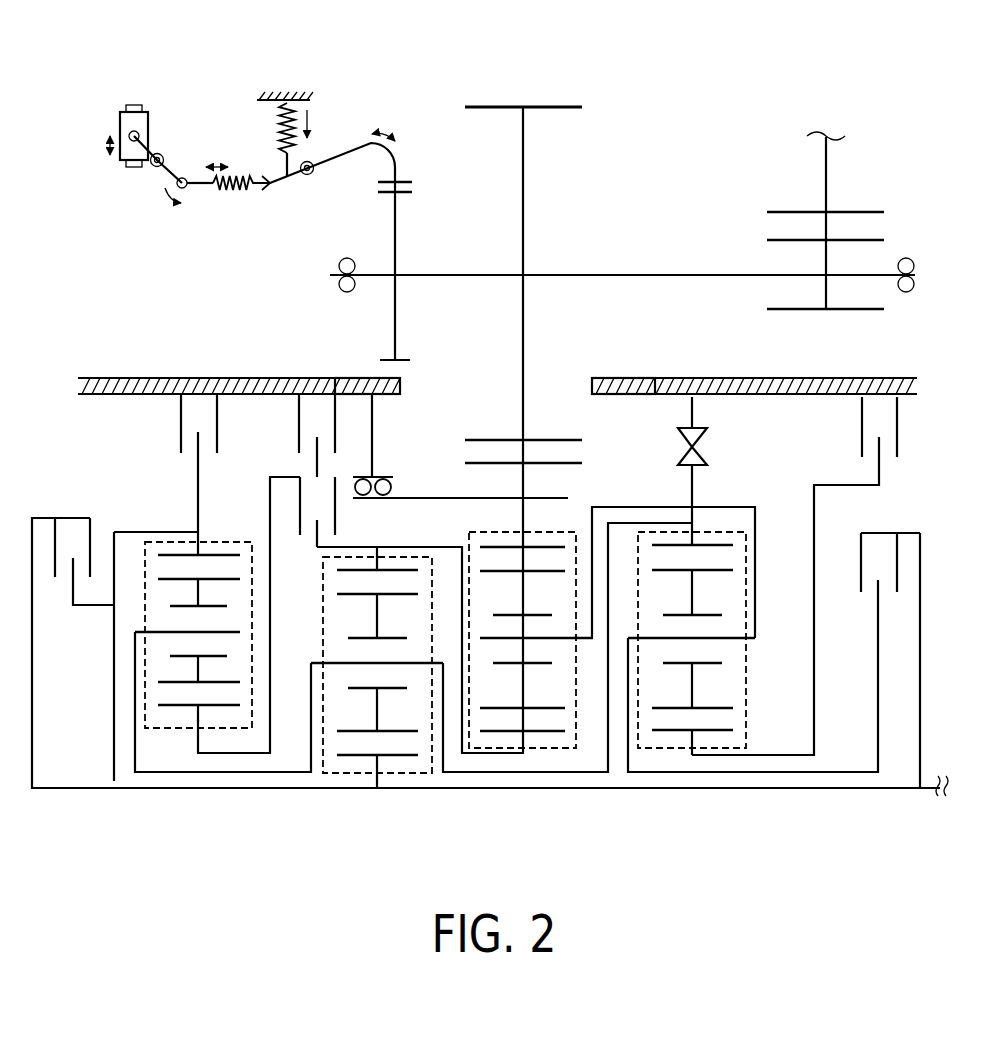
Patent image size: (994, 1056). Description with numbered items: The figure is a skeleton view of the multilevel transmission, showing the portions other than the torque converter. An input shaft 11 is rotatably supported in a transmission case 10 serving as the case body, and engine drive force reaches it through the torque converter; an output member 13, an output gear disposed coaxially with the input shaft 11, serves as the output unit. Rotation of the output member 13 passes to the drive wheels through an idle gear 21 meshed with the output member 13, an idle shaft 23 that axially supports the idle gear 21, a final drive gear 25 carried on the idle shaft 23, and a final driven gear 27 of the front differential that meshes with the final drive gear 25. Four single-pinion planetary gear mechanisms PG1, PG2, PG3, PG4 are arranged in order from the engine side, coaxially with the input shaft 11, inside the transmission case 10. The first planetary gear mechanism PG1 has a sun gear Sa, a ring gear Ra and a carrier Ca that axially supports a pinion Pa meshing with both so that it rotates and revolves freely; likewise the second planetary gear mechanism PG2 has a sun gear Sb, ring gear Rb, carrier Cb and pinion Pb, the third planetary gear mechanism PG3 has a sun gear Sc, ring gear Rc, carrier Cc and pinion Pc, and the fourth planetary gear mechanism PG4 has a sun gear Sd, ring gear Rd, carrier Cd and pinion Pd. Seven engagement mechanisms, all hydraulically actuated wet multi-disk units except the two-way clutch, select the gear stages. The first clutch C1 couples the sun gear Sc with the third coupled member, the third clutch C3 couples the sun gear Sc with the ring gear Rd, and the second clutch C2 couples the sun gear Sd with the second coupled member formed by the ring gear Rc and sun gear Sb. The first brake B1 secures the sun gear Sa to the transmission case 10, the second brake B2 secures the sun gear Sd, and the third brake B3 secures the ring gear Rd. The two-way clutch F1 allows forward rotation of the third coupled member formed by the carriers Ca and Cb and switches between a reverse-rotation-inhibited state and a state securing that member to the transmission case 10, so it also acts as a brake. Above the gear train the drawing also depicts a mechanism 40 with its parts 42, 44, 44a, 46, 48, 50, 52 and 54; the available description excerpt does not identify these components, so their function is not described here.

The transmission case 10 is at (156, 377).
The input shaft 11 is at (934, 800).
The output member 13 is at (573, 459).
The idle gear 21 is at (497, 105).
The idle shaft 23 is at (653, 273).
The final drive gear 25 is at (777, 238).
The final driven gear 27 is at (857, 213).
The parking lock mechanism 40 is at (196, 70).
The parking gear 42 is at (377, 187).
The parking pawl 44 is at (342, 150).
The pawl pivot shaft 44a is at (303, 178).
The parking gear teeth 46 is at (412, 183).
The return spring 48 is at (270, 139).
The parking rod 50 is at (198, 188).
The detent lever 52 is at (173, 157).
The actuator 54 is at (120, 120).
The first brake B1 is at (794, 576).
The second brake B2 is at (317, 435).
The third brake B3 is at (199, 474).
The first clutch C1 is at (774, 660).
The second clutch C2 is at (266, 615).
The third clutch C3 is at (126, 649).
The two-way clutch F1 is at (709, 446).
The first planetary gear mechanism PG1 is at (710, 657).
The second planetary gear mechanism PG2 is at (601, 675).
The third planetary gear mechanism PG3 is at (490, 688).
The fourth planetary gear mechanism PG4 is at (189, 619).
The ring gear Ra is at (707, 540).
The carrier Ca is at (738, 640).
The pinion Pa is at (725, 710).
The sun gear Sa is at (710, 733).
The ring gear Rb is at (540, 545).
The carrier Cb is at (548, 640).
The pinion Pb is at (548, 710).
The sun gear Sb is at (543, 734).
The ring gear Rc is at (352, 572).
The carrier Cc is at (412, 661).
The pinion Pc is at (388, 730).
The sun gear Sc is at (402, 757).
The ring gear Rd is at (221, 553).
The carrier Cd is at (175, 630).
The pinion Pd is at (175, 683).
The sun gear Sd is at (175, 708).